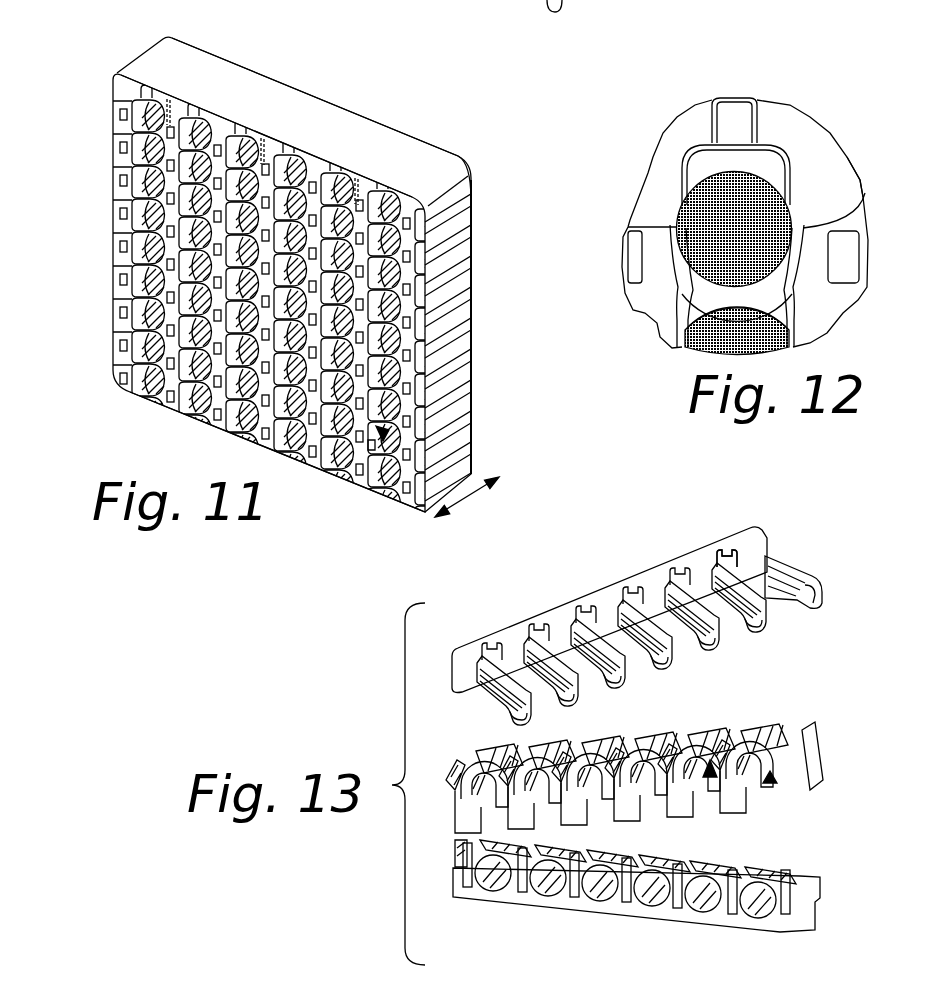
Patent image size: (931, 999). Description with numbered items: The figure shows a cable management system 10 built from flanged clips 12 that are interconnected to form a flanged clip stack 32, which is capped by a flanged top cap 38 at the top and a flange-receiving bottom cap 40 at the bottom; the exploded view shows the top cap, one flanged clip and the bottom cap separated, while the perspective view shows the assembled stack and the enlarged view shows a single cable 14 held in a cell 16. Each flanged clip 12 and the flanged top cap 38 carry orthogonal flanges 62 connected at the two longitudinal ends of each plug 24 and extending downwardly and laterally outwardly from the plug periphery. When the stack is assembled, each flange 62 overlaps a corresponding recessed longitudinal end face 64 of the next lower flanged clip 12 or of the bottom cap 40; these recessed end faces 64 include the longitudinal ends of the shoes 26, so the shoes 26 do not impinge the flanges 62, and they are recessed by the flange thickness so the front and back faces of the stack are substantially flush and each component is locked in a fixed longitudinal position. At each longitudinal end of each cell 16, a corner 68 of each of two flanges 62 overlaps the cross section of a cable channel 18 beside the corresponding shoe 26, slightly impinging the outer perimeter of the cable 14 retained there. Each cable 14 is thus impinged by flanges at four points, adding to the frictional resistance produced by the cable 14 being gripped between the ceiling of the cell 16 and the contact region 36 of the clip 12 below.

In FIG. 11, the cable management system 10 is at (97, 93).
In FIG. 11, the flanged clip 12 is at (455, 237).
In FIG. 13, the flanged clip 12 is at (836, 660).
In FIG. 12, the cable 14 is at (678, 220).
In FIG. 11, the cell 16 is at (371, 448).
In FIG. 13, the cell 16 is at (707, 790).
In FIG. 11, the cable channel 18 is at (146, 234).
In FIG. 13, the cable channel 18 is at (770, 797).
In FIG. 13, the plug 24 is at (737, 606).
In FIG. 13, the shoe 26 is at (750, 746).
In FIG. 11, the flanged clip stack 32 is at (473, 184).
In FIG. 12, the contact region 36 is at (734, 140).
In FIG. 13, the contact region 36 is at (596, 752).
In FIG. 11, the flanged top cap 38 is at (359, 138).
In FIG. 13, the flanged top cap 38 is at (738, 521).
In FIG. 11, the flange-receiving bottom cap 40 is at (384, 503).
In FIG. 13, the flange-receiving bottom cap 40 is at (778, 932).
In FIG. 11, the orthogonal flange 62 is at (213, 118).
In FIG. 12, the orthogonal flange 62 is at (687, 184).
In FIG. 13, the orthogonal flange 62 is at (604, 635).
In FIG. 13, the recessed longitudinal end face 64 is at (814, 731).
In FIG. 12, the corner 68 is at (862, 192).